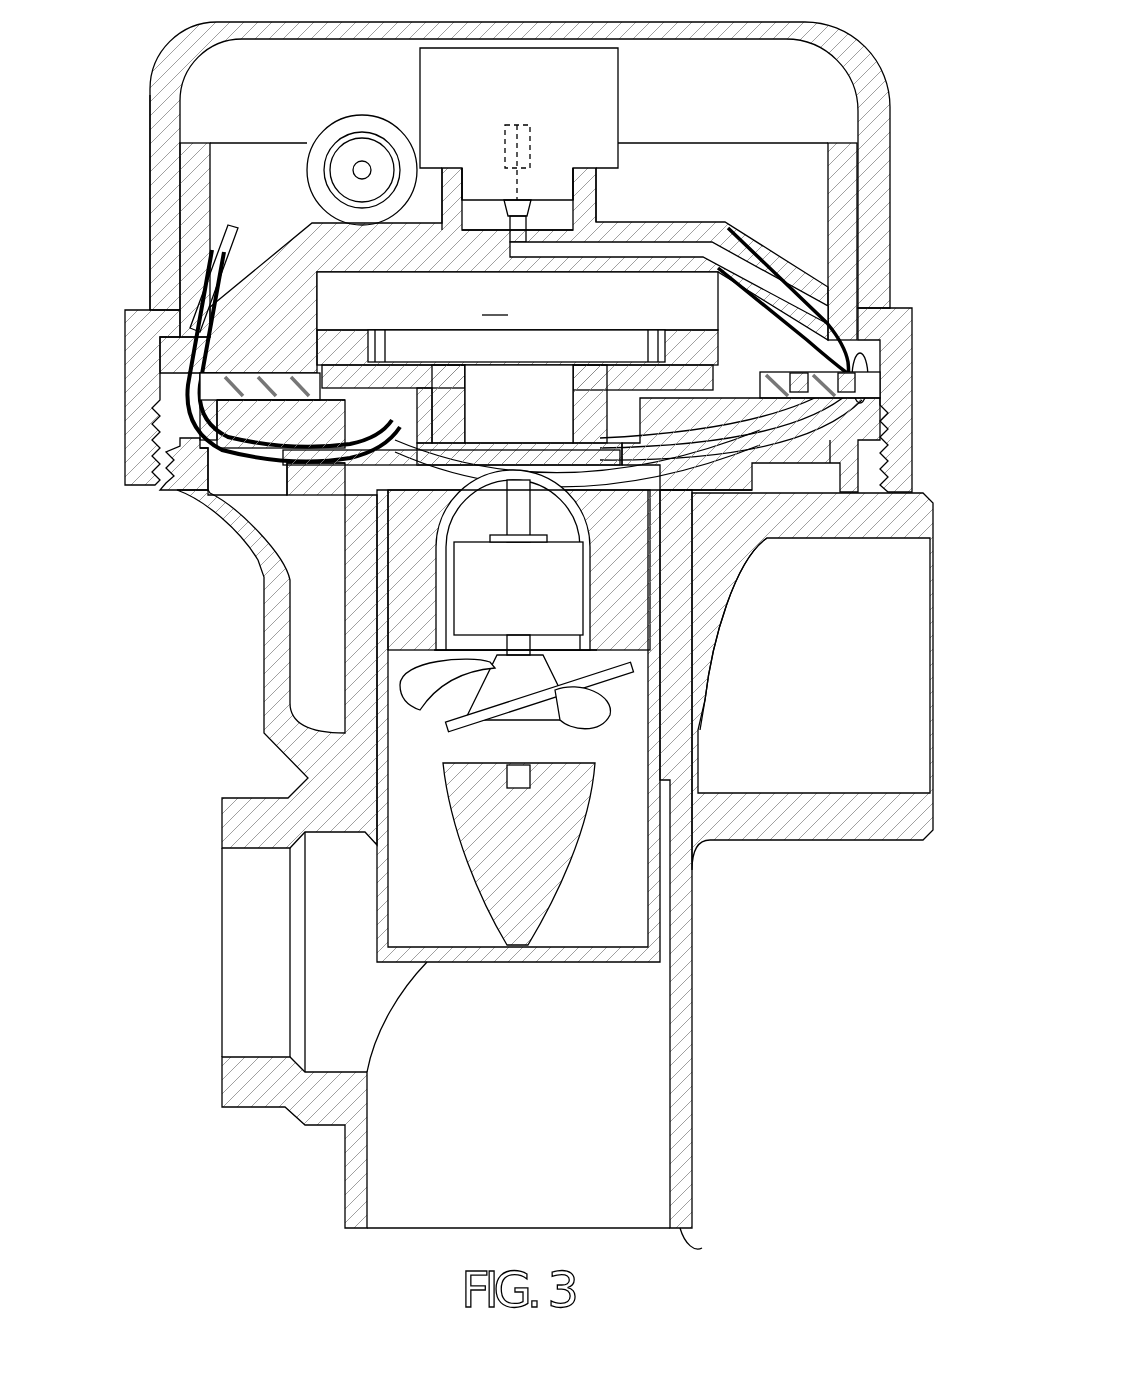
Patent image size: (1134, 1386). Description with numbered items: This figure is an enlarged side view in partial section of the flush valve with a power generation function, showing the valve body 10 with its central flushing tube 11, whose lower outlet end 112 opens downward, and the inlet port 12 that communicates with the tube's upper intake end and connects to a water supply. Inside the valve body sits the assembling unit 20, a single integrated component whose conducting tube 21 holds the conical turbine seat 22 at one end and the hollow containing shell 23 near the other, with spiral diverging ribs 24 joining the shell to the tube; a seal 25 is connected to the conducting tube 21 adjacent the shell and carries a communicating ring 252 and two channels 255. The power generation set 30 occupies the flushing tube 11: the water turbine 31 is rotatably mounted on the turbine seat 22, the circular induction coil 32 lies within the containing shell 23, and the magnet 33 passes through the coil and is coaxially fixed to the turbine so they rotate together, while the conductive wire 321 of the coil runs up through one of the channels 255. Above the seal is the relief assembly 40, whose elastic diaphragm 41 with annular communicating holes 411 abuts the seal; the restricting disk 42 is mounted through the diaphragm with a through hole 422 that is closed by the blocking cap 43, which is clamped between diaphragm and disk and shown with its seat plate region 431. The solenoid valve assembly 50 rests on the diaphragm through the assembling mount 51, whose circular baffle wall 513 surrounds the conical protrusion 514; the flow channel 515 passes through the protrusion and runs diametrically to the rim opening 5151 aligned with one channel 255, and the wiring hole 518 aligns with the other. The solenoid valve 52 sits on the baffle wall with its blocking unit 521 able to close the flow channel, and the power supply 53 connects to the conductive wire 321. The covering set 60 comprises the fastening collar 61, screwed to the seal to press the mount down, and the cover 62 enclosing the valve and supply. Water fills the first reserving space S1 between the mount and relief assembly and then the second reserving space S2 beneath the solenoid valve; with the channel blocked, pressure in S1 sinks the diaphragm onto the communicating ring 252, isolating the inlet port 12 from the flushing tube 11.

The valve body 10 is at (757, 1107).
The flushing tube 11 is at (700, 1030).
The outlet end 112 is at (702, 1248).
The inlet port 12 is at (830, 823).
The assembling unit 20 is at (360, 962).
The conducting tube 21 is at (383, 873).
The turbine seat 22 is at (535, 895).
The containing shell 23 is at (535, 468).
The diverging ribs 24 is at (622, 613).
The seal 25 is at (163, 496).
The communicating ring 252 is at (682, 413).
The channels 255 is at (745, 555).
The power generation set 30 is at (622, 733).
The water turbine 31 is at (590, 747).
The induction coil 32 is at (455, 628).
The magnet 33 is at (503, 540).
The relief assembly 40 is at (283, 330).
The diaphragm 41 is at (840, 377).
The communicating holes 411 is at (770, 405).
The restricting disk 42 is at (355, 325).
The through hole 422 is at (570, 385).
The blocking cap 43 is at (460, 462).
The seat plate 431 is at (290, 476).
The solenoid valve assembly 50 is at (740, 118).
The assembling mount 51 is at (725, 210).
The baffle wall 513 is at (455, 185).
The conical protrusion 514 is at (528, 228).
The flow channel 515 is at (640, 245).
The opening 5151 is at (900, 430).
The solenoid valve 52 is at (628, 80).
The blocking unit 521 is at (520, 125).
The power supply 53 is at (350, 130).
The covering set 60 is at (180, 28).
The fastening collar 61 is at (150, 330).
The cover 62 is at (165, 130).
The conductive wire 321 is at (228, 232).
The wiring hole 518 is at (185, 392).
The first reserving space S1 is at (495, 298).
The second reserving space S2 is at (478, 195).